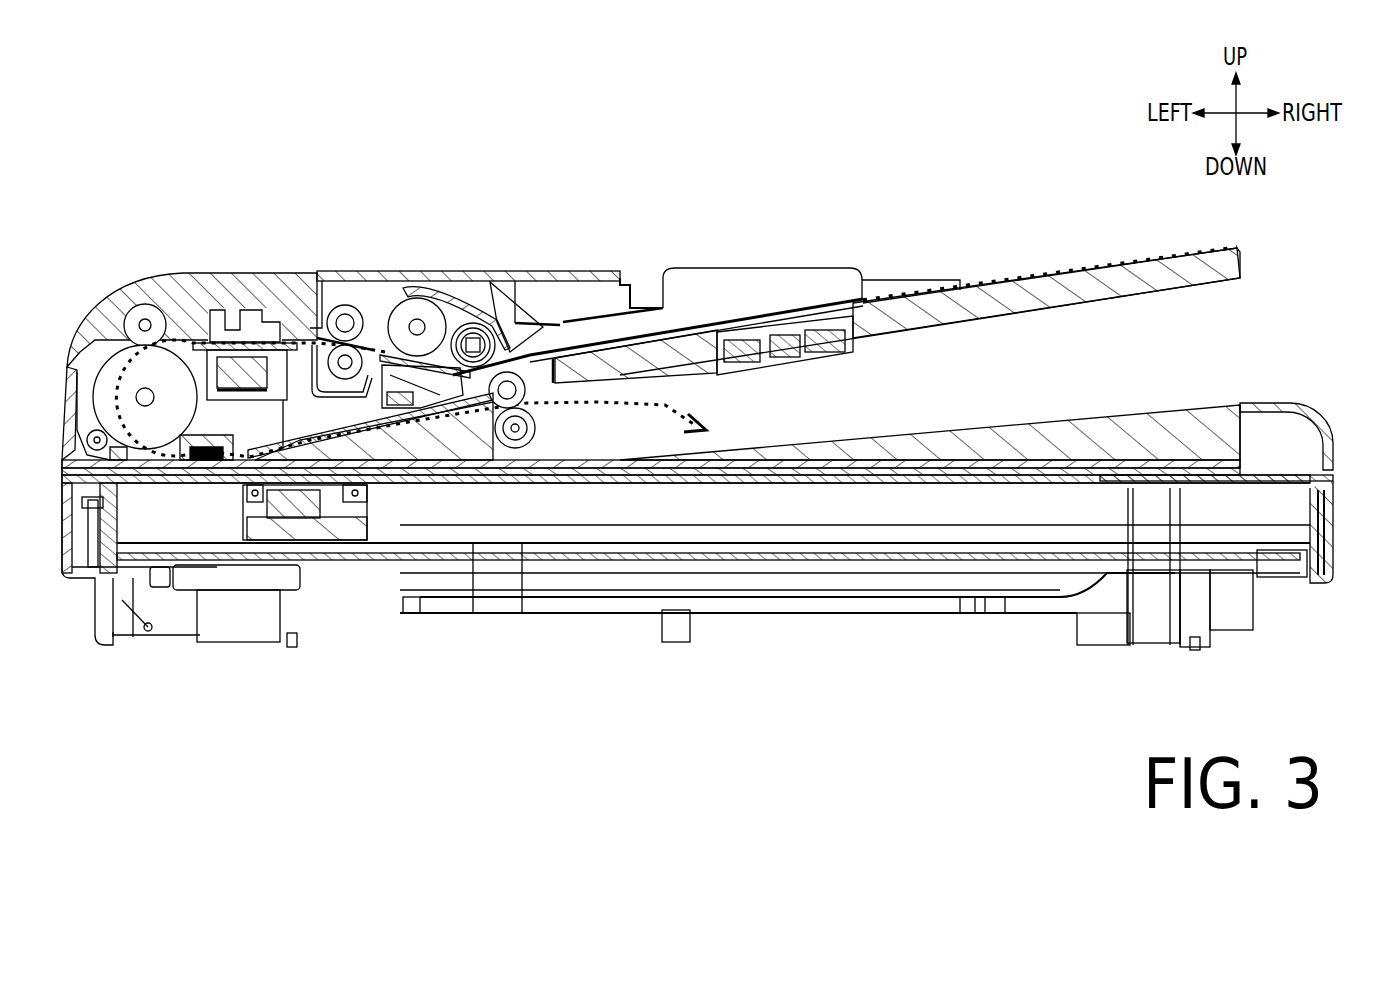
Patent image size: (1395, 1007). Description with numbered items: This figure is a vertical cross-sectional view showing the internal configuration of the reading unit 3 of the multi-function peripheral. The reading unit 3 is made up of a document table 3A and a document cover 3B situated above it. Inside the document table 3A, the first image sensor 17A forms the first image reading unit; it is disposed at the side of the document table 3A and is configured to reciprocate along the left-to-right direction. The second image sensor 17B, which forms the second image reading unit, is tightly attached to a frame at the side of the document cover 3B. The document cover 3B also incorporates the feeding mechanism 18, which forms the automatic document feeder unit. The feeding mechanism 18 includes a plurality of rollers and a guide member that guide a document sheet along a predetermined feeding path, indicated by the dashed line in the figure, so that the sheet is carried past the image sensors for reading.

The reading unit 3 is at (196, 193).
The document table 3A is at (1333, 500).
The document cover 3B is at (1333, 433).
The first image sensor 17A is at (340, 540).
The second image sensor 17B is at (217, 398).
The feeding mechanism 18 is at (375, 298).